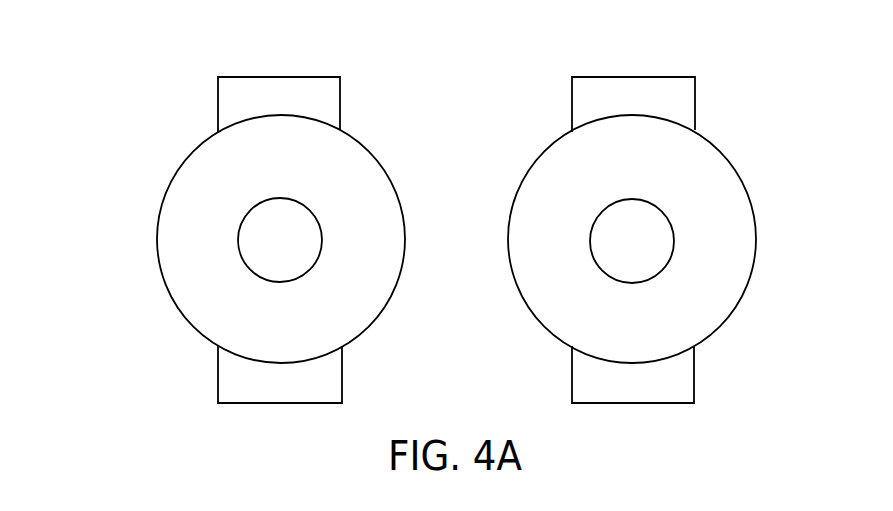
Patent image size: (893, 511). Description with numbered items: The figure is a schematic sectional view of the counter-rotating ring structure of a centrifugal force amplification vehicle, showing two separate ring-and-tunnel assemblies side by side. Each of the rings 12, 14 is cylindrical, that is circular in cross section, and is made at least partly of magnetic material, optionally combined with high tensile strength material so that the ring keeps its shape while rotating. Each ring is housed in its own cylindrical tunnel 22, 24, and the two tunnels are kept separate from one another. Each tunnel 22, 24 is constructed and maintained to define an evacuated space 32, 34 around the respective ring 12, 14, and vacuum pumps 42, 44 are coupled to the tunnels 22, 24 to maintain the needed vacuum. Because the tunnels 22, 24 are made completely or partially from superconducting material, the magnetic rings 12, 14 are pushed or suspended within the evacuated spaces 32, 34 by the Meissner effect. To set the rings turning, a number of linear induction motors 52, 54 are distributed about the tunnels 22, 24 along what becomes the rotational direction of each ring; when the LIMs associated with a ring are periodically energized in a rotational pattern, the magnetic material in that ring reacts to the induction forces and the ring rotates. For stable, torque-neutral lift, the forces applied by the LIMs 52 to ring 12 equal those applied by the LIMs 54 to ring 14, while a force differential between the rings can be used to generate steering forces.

The ring 12 is at (239, 246).
The ring 14 is at (674, 240).
The tunnel 22 is at (171, 180).
The tunnel 24 is at (733, 313).
The evacuated space 32 is at (220, 321).
The evacuated space 34 is at (683, 317).
The vacuum pump 42 is at (253, 404).
The vacuum pump 44 is at (650, 403).
The linear induction motor 52 is at (317, 77).
The linear induction motor 54 is at (663, 77).